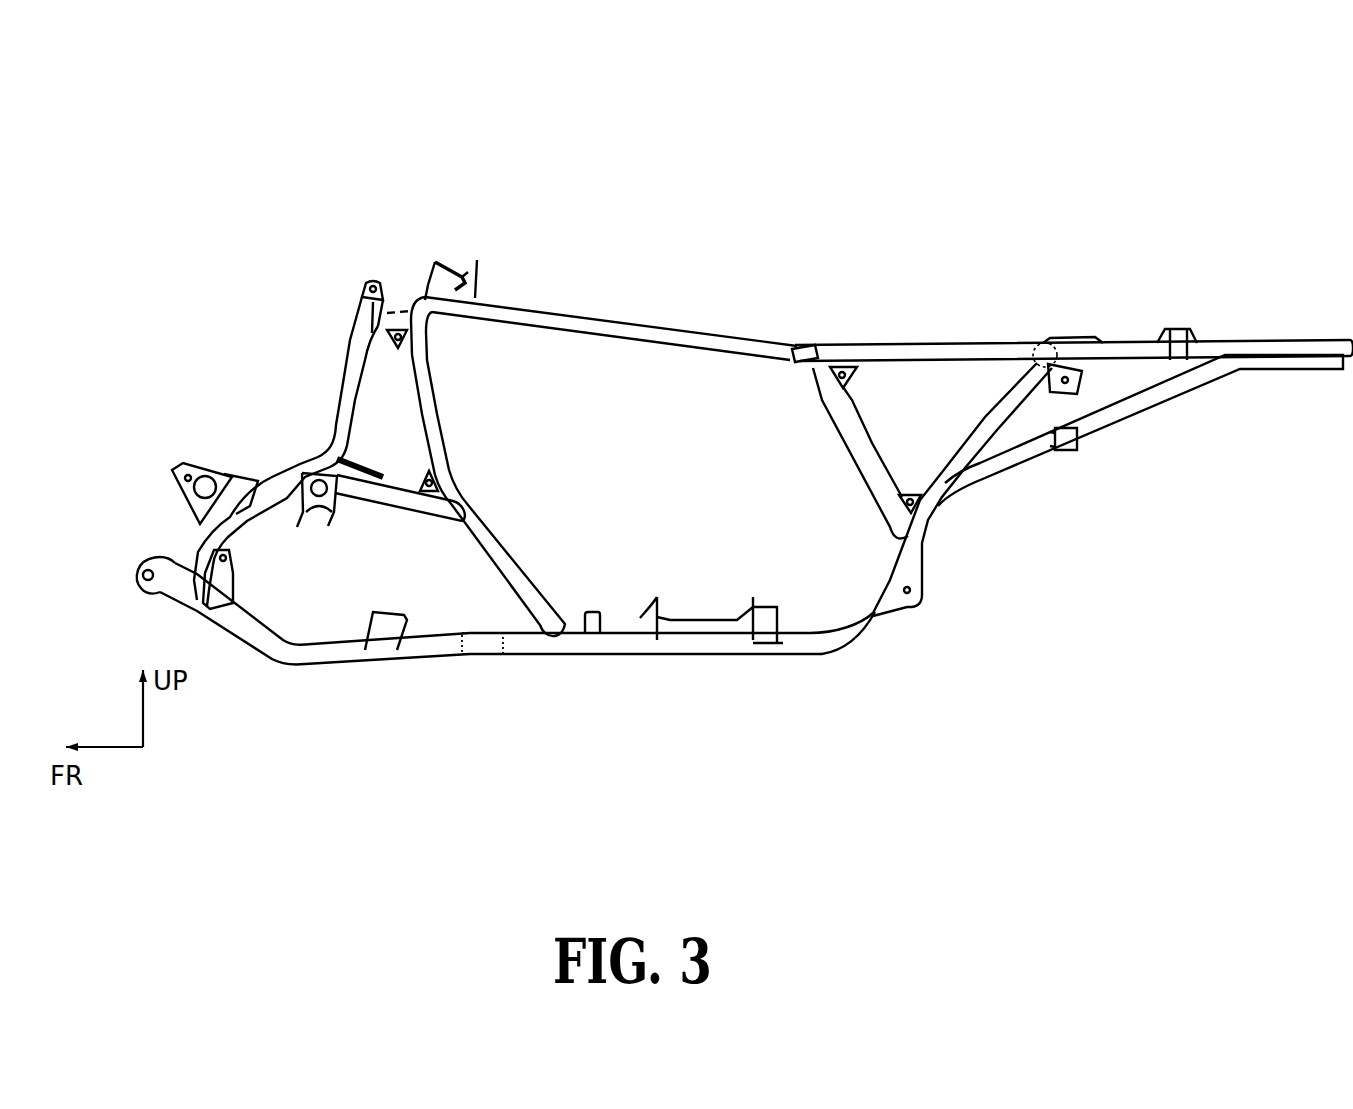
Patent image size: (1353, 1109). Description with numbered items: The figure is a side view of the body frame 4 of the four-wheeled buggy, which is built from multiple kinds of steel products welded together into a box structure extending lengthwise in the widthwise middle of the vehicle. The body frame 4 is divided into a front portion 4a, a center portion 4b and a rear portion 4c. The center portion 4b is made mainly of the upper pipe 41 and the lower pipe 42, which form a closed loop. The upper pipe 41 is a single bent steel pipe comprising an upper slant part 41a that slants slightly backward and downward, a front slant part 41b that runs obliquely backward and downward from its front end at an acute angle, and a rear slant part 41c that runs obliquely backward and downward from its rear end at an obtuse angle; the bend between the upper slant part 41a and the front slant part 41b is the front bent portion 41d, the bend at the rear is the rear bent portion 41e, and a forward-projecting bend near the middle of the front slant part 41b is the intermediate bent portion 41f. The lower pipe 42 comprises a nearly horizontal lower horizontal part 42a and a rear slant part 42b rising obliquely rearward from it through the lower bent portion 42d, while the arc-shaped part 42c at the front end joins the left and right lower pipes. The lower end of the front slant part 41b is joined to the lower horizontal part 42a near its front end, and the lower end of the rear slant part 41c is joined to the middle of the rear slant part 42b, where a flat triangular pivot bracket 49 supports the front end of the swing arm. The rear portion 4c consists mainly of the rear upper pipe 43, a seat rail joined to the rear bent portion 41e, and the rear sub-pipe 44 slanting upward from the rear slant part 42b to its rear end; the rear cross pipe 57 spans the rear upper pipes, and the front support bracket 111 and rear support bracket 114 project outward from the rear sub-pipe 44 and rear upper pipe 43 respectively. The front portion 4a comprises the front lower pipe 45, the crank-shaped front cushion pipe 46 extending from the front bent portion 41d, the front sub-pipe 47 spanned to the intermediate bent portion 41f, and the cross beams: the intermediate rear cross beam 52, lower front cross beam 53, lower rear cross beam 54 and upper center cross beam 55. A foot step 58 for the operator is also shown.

The body frame 4 is at (918, 212).
The front portion 4a is at (241, 386).
The center portion 4b is at (606, 286).
The rear portion 4c is at (1117, 306).
The upper pipe 41 is at (558, 311).
The upper slant part 41a is at (715, 341).
The front slant part 41b is at (442, 428).
The rear slant part 41c is at (853, 452).
The front bent portion 41d is at (409, 300).
The rear bent portion 41e is at (818, 351).
The intermediate bent portion 41f is at (458, 493).
The lower pipe 42 is at (715, 661).
The lower horizontal part 42a is at (678, 653).
The rear slant part 42b is at (988, 421).
The arc-shaped part 42c is at (465, 660).
The lower bent portion 42d is at (852, 636).
The rear upper pipe 43 is at (985, 346).
The rear sub-pipe 44 is at (1159, 407).
The front lower pipe 45 is at (300, 666).
The front cushion pipe 46 is at (339, 394).
The front sub-pipe 47 is at (407, 513).
The pivot bracket 49 is at (930, 572).
The intermediate rear cross beam 52 is at (336, 530).
The lower front cross beam 53 is at (243, 588).
The lower rear cross beam 54 is at (369, 626).
The upper center cross beam 55 is at (356, 312).
The rear cross pipe 57 is at (229, 469).
The foot step 58 is at (770, 601).
The front support bracket 111 is at (1073, 451).
The rear support bracket 114 is at (1197, 339).